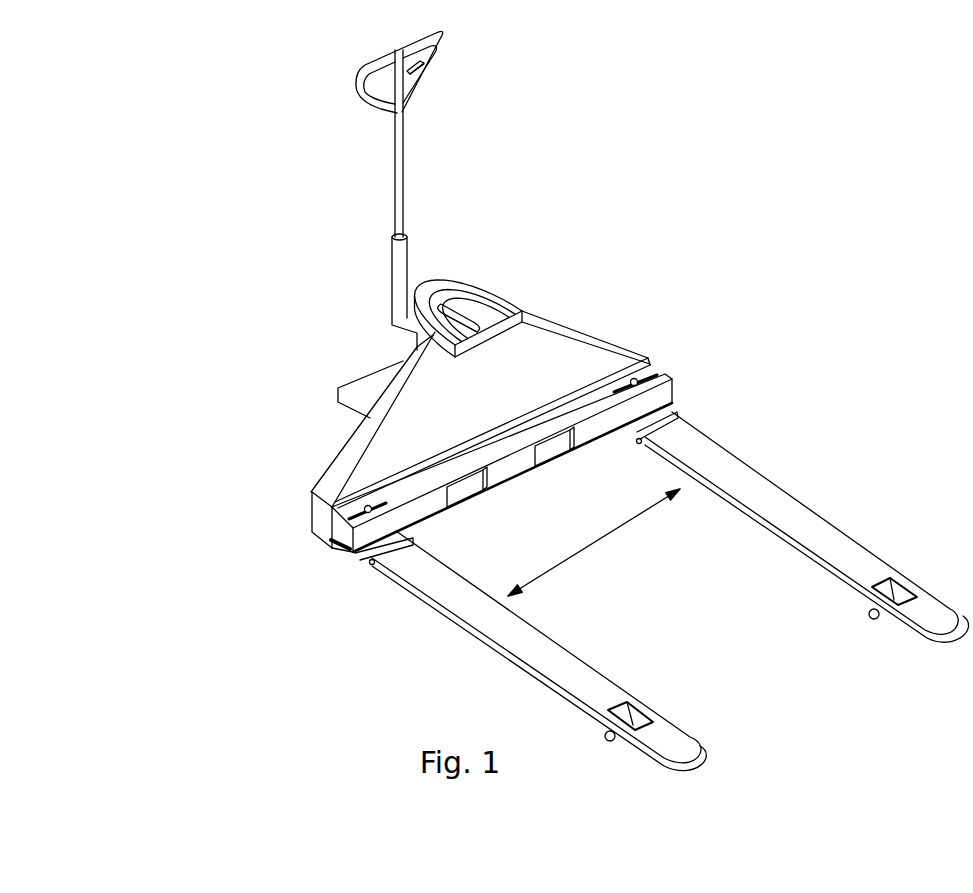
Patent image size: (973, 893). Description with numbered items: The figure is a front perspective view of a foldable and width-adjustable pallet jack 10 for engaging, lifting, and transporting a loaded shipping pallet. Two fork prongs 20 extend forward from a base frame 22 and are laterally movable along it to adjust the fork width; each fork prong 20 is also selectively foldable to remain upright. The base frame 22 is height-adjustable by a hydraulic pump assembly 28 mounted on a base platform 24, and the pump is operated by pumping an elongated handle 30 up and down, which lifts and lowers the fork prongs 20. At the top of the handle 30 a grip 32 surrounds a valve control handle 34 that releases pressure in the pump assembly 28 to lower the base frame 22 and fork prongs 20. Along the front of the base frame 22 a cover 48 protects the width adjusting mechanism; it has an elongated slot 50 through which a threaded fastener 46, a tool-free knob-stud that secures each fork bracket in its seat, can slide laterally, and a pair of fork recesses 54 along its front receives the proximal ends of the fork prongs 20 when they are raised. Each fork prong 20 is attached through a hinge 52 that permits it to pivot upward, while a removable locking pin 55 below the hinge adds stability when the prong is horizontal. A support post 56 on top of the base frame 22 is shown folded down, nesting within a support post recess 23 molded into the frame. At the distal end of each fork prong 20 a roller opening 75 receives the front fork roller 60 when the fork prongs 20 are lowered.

The foldable pallet jack 10 is at (204, 148).
The fork prong 20 is at (558, 660).
The base frame 22 is at (562, 320).
The support post recess 23 is at (449, 291).
The base platform 24 is at (348, 402).
The hydraulic pump assembly 28 is at (416, 344).
The handle 30 is at (399, 218).
The grip 32 is at (440, 55).
The valve control handle 34 is at (411, 78).
The threaded fastener 46 is at (367, 508).
The cover 48 is at (340, 540).
The elongated slot 50 is at (433, 477).
The hinge 52 is at (414, 542).
The fork recess 54 is at (473, 492).
The locking pin 55 is at (370, 563).
The support post 56 is at (454, 315).
The front fork roller 60 is at (605, 739).
The roller opening 75 is at (629, 714).